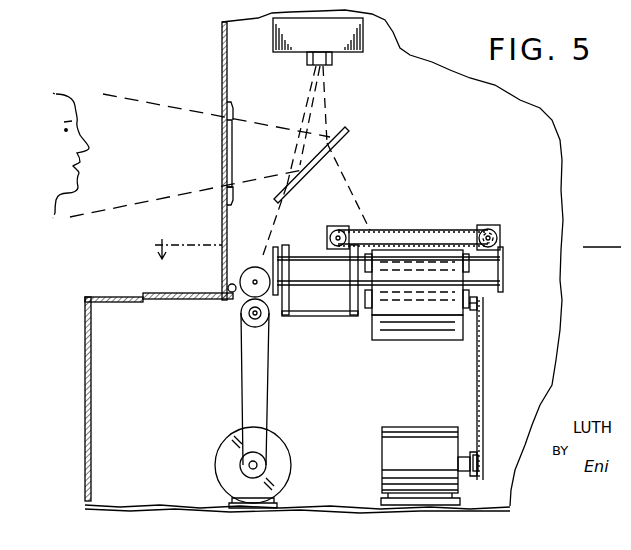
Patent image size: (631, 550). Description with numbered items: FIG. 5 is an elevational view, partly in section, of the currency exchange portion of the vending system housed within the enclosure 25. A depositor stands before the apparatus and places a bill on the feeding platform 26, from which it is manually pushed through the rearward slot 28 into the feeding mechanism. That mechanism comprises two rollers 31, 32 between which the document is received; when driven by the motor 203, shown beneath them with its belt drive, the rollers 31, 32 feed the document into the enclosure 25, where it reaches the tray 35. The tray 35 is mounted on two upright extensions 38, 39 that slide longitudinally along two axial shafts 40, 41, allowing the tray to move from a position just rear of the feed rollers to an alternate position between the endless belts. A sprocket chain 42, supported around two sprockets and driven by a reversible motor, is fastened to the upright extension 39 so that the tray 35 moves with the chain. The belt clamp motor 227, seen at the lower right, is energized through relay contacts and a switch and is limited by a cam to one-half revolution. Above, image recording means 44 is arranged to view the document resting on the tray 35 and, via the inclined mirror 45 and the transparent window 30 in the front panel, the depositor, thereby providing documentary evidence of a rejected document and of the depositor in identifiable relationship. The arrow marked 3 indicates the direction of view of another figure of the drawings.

The section view direction 3 is at (188, 263).
The enclosure 25 is at (86, 360).
The feeding platform 26 is at (182, 300).
The slot 28 is at (228, 286).
The transparent window 30 is at (222, 141).
The roller 31 is at (244, 272).
The roller 32 is at (243, 319).
The tray 35 is at (327, 318).
The upright extension 38 is at (288, 305).
The upright extension 39 is at (354, 305).
The axial shaft 40 is at (494, 292).
The axial shaft 41 is at (502, 272).
The sprocket chain 42 is at (400, 230).
The image recording means 44 is at (332, 43).
The inclined mirror 45 is at (348, 128).
The motor 203 is at (240, 430).
The belt clamp motor 227 is at (436, 465).